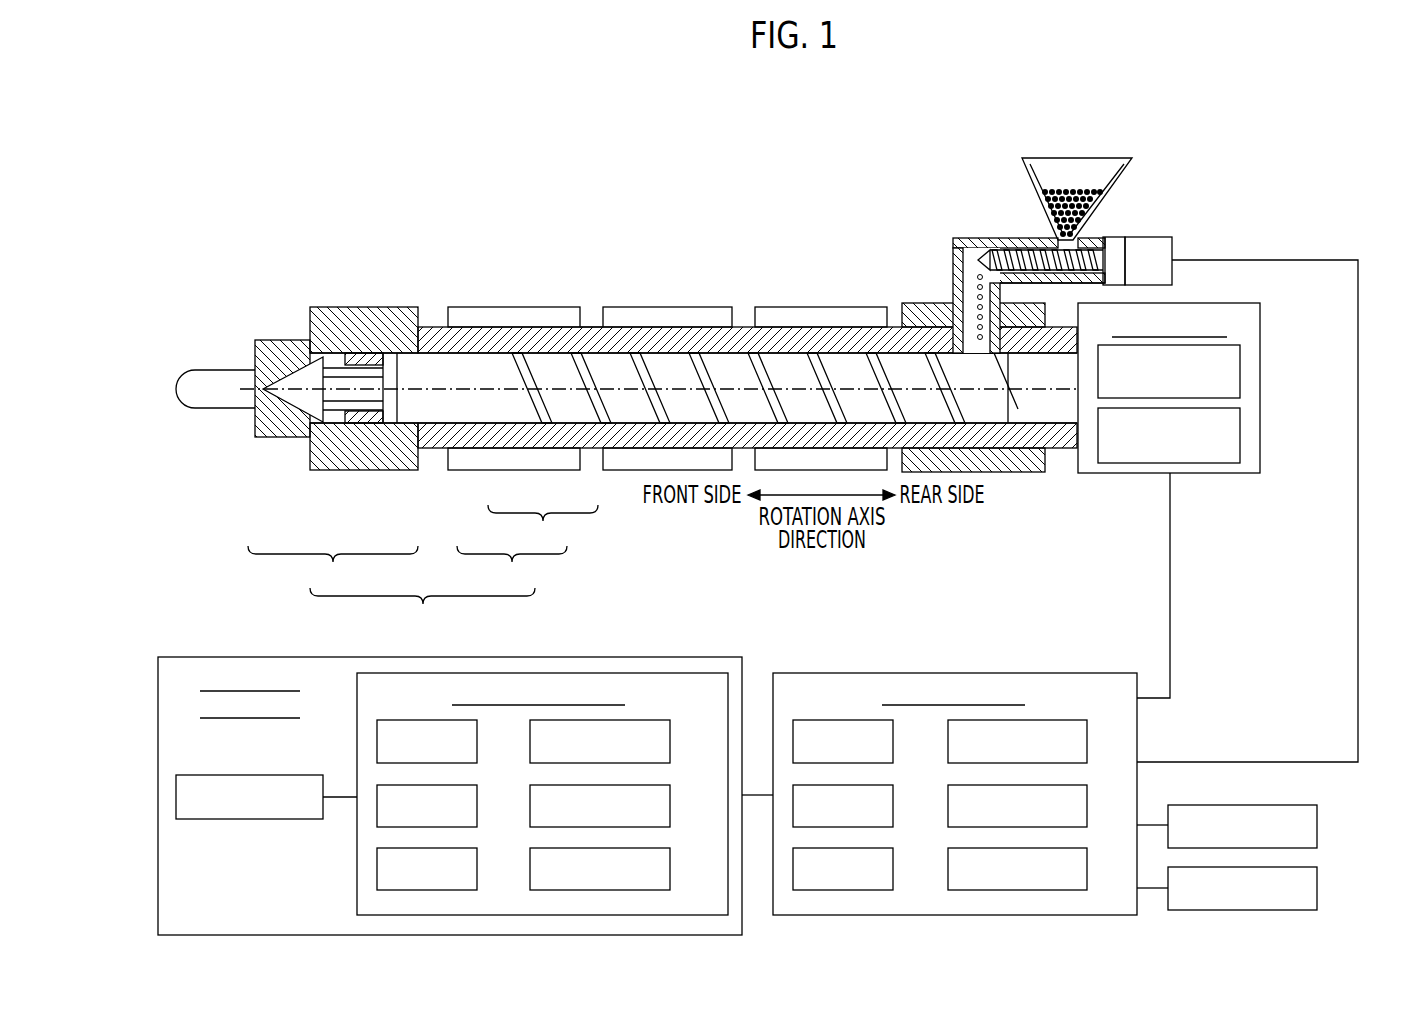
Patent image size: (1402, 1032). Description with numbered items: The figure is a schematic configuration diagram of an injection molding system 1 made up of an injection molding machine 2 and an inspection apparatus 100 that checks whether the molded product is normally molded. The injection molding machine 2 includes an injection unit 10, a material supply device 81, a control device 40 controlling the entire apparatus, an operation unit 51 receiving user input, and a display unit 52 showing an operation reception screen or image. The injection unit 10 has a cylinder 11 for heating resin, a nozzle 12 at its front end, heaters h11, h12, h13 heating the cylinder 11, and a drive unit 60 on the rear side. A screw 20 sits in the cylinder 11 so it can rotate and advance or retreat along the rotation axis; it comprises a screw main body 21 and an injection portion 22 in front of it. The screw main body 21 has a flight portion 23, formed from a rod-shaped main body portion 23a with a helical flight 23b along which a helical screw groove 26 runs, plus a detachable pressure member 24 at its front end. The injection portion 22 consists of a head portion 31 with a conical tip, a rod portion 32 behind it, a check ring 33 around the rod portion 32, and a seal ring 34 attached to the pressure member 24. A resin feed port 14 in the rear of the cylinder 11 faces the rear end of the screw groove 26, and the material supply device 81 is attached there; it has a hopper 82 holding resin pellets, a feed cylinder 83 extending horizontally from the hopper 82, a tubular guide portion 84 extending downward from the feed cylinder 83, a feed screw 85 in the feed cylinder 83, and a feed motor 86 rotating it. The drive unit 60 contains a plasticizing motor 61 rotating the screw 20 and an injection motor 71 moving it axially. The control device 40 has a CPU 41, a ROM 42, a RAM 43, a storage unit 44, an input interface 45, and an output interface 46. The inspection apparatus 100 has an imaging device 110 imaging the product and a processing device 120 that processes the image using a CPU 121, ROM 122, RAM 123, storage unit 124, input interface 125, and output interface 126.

The injection molding system 1 is at (1336, 142).
The injection molding machine 2 is at (297, 202).
The injection unit 10 is at (429, 270).
The cylinder 11 is at (588, 324).
The nozzle 12 is at (216, 370).
The resin feed port 14 is at (972, 338).
The heater h11 is at (807, 306).
The heater h12 is at (660, 306).
The heater h13 is at (512, 306).
The screw 20 is at (422, 611).
The screw main body 21 is at (527, 551).
The injection portion 22 is at (333, 571).
The flight portion 23 is at (765, 454).
The main body portion 23a is at (573, 403).
The flight 23b is at (537, 400).
The pressure member 24 is at (457, 430).
The screw groove 26 is at (641, 424).
The head portion 31 is at (286, 415).
The rod portion 32 is at (336, 424).
The check ring 33 is at (365, 424).
The seal ring 34 is at (390, 422).
The control device 40 is at (1045, 672).
The CPU 41 is at (874, 764).
The ROM 42 is at (874, 828).
The RAM 43 is at (874, 891).
The storage unit 44 is at (1068, 764).
The input interface 45 is at (1068, 828).
The output interface 46 is at (1068, 891).
The operation unit 51 is at (1318, 825).
The display unit 52 is at (1318, 888).
The drive unit 60 is at (1260, 320).
The plasticizing motor 61 is at (1240, 370).
The injection motor 71 is at (1240, 432).
The material supply device 81 is at (1160, 220).
The hopper 82 is at (1127, 175).
The feed cylinder 83 is at (958, 238).
The tubular guide portion 84 is at (953, 256).
The feed screw 85 is at (983, 252).
The feed motor 86 is at (1172, 245).
The inspection apparatus 100 is at (633, 657).
The imaging device 110 is at (250, 819).
The processing device 120 is at (357, 892).
The CPU 121 is at (458, 764).
The ROM 122 is at (458, 828).
The RAM 123 is at (458, 891).
The storage unit 124 is at (650, 764).
The input interface 125 is at (650, 828).
The output interface 126 is at (650, 891).